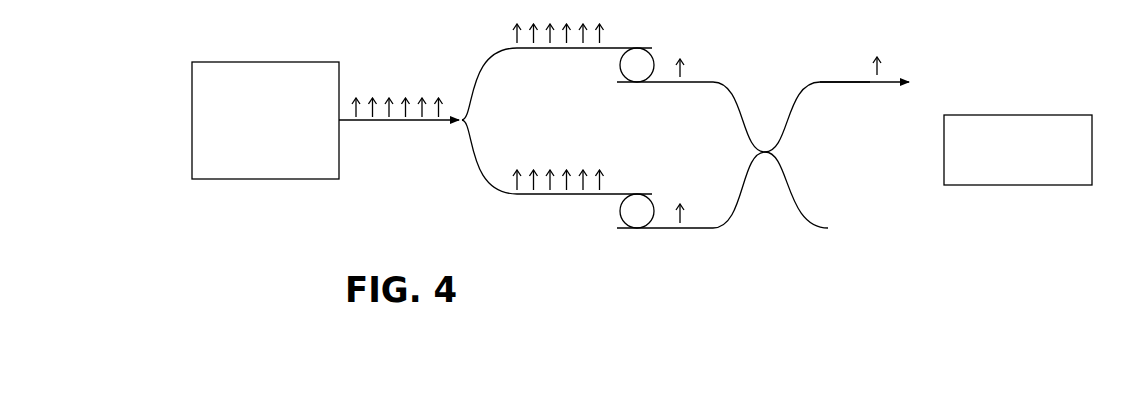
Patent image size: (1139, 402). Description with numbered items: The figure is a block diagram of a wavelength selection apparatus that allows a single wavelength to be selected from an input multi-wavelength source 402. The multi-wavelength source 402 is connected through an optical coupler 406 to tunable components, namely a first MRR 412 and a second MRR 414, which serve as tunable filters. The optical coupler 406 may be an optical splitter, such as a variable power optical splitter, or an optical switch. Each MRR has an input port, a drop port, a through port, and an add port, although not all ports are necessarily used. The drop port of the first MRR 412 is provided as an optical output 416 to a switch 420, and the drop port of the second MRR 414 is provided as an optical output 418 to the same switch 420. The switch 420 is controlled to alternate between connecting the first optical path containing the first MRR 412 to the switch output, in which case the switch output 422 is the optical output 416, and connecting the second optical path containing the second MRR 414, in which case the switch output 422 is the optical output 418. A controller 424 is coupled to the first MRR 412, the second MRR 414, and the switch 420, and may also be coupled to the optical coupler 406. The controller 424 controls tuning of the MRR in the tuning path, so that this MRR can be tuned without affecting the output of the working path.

The multi-wavelength source 402 is at (315, 61).
The optical coupler 406 is at (478, 123).
The first MRR 412 is at (620, 67).
The second MRR 414 is at (620, 212).
The optical output 416 is at (717, 82).
The optical output 418 is at (715, 228).
The switch 420 is at (754, 154).
The switch output 422 is at (867, 83).
The controller 424 is at (1018, 150).